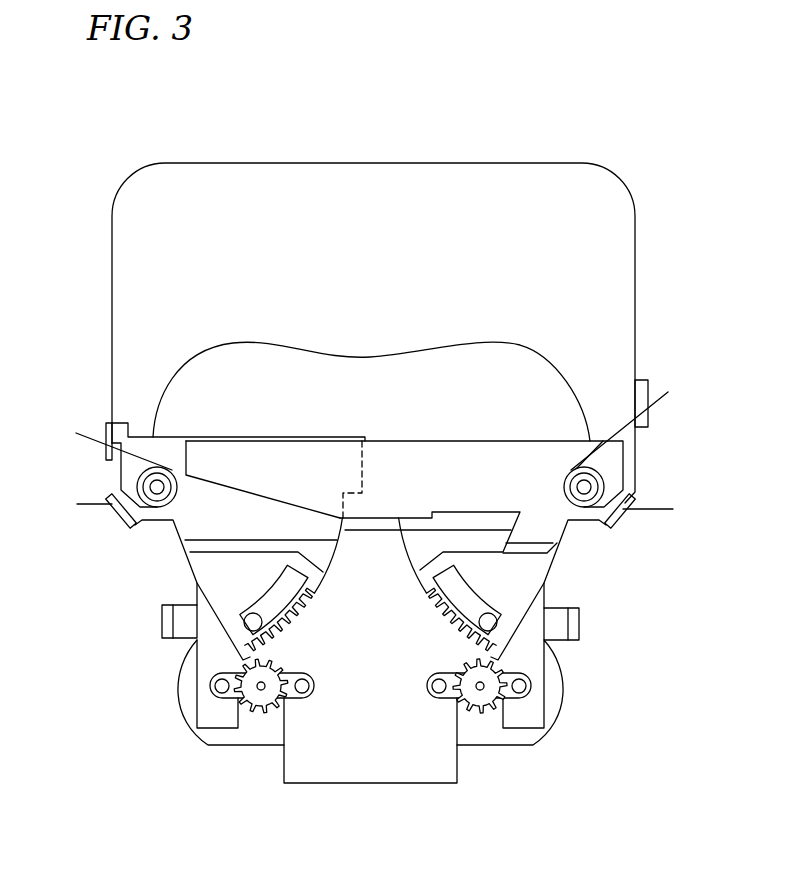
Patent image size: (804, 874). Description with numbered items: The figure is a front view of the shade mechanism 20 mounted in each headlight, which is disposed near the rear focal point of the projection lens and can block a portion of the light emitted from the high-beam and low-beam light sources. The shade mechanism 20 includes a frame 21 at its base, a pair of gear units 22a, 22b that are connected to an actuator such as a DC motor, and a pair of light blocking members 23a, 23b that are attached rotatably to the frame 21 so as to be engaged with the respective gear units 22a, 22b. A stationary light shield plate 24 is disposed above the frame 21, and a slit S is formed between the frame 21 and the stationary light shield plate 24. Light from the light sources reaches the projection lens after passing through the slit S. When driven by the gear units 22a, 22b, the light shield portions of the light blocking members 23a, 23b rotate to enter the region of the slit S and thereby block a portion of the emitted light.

The shade mechanism 20 is at (362, 128).
The stationary light shield plate 24 is at (148, 242).
The slit S is at (178, 390).
The light blocking member 23a is at (203, 523).
The light blocking member 23b is at (541, 515).
The gear unit 22a is at (262, 717).
The gear unit 22b is at (480, 717).
The frame 21 is at (345, 765).